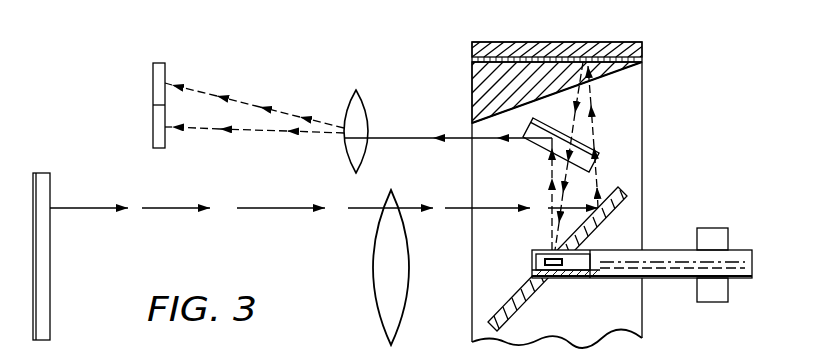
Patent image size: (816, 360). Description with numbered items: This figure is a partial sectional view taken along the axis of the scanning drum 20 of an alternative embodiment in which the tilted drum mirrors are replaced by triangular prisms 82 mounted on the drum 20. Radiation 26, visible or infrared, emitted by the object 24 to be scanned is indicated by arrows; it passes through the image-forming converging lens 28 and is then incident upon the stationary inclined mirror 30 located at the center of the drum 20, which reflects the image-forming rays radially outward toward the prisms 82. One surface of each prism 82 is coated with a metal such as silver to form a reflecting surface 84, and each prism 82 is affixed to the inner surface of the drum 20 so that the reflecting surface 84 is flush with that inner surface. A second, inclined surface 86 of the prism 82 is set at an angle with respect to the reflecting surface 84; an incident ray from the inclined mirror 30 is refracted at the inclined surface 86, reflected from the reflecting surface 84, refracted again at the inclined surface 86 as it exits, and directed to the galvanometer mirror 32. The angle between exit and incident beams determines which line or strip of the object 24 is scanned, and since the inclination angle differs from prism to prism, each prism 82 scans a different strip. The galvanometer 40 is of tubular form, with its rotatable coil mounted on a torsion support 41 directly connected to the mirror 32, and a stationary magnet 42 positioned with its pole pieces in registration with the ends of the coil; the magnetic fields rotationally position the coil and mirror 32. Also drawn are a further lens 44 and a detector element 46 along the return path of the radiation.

The scanning drum 20 is at (617, 44).
The object 24 is at (50, 183).
The radiation 26 is at (250, 208).
The image-forming converging lens 28 is at (400, 320).
The inclined mirror 30 is at (519, 304).
The galvanometer mirror 32 is at (555, 268).
The galvanometer 40 is at (619, 252).
The torsion support 41 is at (572, 270).
The stationary magnet 42 is at (717, 235).
The focusing lens 44 is at (362, 157).
The detector 46 is at (165, 135).
The triangular prism 82 is at (495, 88).
The reflecting surface 84 is at (505, 60).
The inclined surface 86 is at (588, 80).